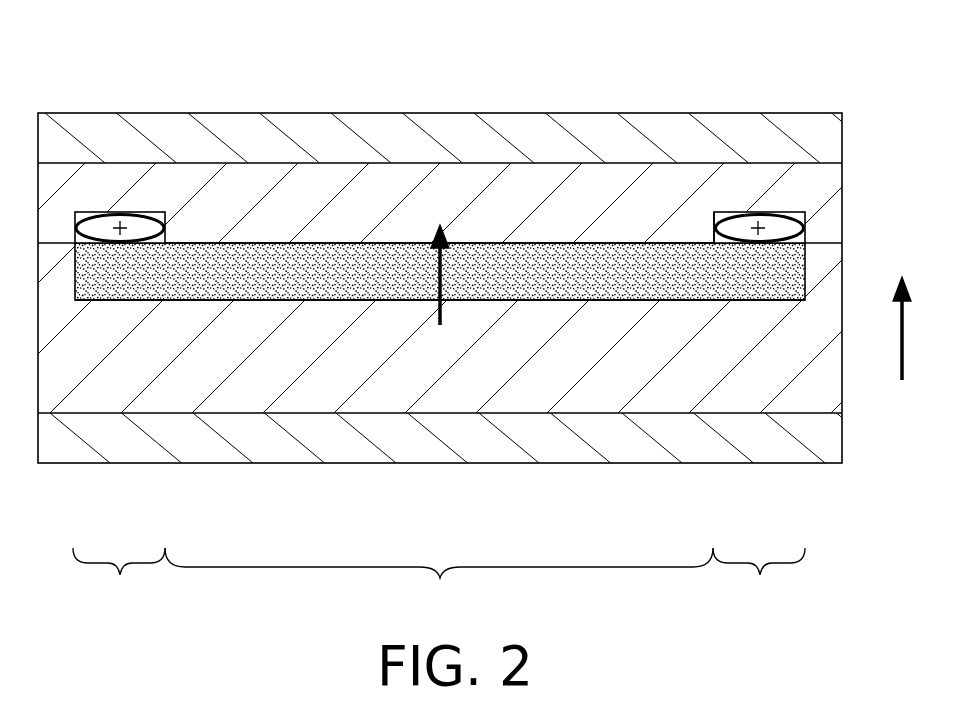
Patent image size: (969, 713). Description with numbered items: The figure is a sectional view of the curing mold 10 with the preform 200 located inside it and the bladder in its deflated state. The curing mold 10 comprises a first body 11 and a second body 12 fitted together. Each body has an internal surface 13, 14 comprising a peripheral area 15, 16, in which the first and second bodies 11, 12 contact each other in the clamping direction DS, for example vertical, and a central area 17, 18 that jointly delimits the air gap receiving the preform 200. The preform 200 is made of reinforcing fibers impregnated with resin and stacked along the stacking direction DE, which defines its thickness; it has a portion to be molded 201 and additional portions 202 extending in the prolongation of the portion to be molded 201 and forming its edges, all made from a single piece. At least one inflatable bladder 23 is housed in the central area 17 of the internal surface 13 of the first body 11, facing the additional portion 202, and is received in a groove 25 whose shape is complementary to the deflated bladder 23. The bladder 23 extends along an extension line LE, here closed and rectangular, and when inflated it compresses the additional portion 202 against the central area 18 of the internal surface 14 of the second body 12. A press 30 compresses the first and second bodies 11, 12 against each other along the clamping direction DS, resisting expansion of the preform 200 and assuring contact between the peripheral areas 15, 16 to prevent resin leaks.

The curing mold 10 is at (603, 110).
The first body 11 is at (318, 205).
The second body 12 is at (348, 403).
The internal surface of first body 13 is at (226, 243).
The internal surface of second body 14 is at (210, 300).
The peripheral area of first body internal surface 15 is at (68, 245).
The peripheral area of second body internal surface 16 is at (70, 245).
The central area of first body internal surface 17 is at (499, 243).
The central area of second body internal surface 18 is at (535, 295).
The inflatable bladder 23 is at (800, 211).
The groove 25 is at (718, 212).
The press 30 is at (467, 288).
The preform 200 is at (378, 270).
The portion to be molded 201 is at (439, 582).
The additional portion 202 is at (439, 579).
The extension line LE is at (760, 226).
The stacking direction DE is at (440, 318).
The clamping direction DS is at (884, 328).